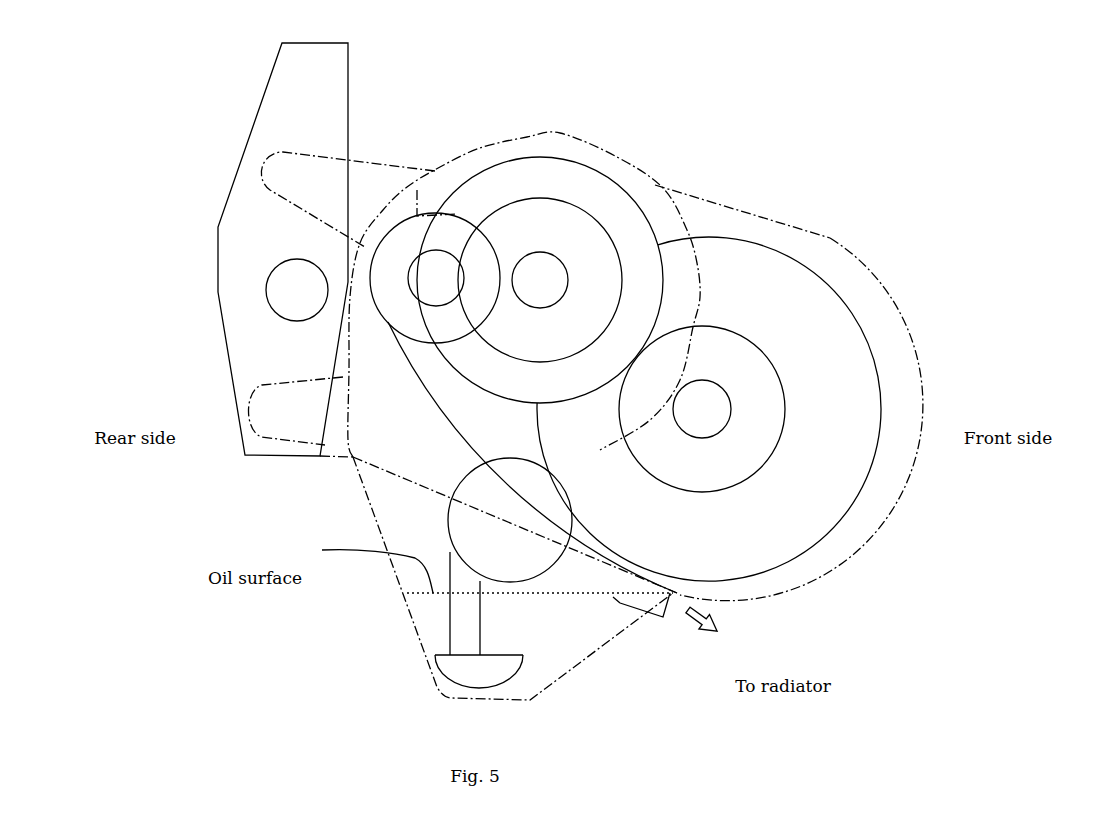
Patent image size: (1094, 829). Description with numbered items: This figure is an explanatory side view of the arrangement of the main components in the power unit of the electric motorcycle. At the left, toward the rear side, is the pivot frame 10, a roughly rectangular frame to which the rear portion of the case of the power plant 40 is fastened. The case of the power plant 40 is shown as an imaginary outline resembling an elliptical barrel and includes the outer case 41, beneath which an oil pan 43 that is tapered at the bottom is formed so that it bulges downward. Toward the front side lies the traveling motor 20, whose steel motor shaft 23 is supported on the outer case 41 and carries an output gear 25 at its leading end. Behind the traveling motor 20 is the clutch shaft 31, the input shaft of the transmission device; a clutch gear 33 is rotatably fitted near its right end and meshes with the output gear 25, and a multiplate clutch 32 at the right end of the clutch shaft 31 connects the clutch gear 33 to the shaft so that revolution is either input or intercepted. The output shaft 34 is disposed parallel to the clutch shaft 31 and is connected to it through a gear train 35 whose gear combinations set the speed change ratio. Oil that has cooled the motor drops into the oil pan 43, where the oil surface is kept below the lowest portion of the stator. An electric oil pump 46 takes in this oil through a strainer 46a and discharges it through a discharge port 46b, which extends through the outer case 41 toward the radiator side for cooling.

The pivot frame 10 is at (258, 110).
The traveling motor 20 is at (825, 283).
The motor shaft 23 is at (723, 427).
The output gear 25 is at (783, 380).
The clutch shaft 31 is at (563, 260).
The multiplate clutch 32 is at (570, 200).
The clutch gear 33 is at (542, 157).
The output shaft 34 is at (447, 250).
The gear train 35 is at (418, 193).
The power plant 40 is at (773, 218).
The outer case 41 is at (820, 238).
The oil pan 43 is at (418, 630).
The electric oil pump 46 is at (457, 477).
The strainer 46a is at (481, 622).
The discharge port 46b is at (620, 600).